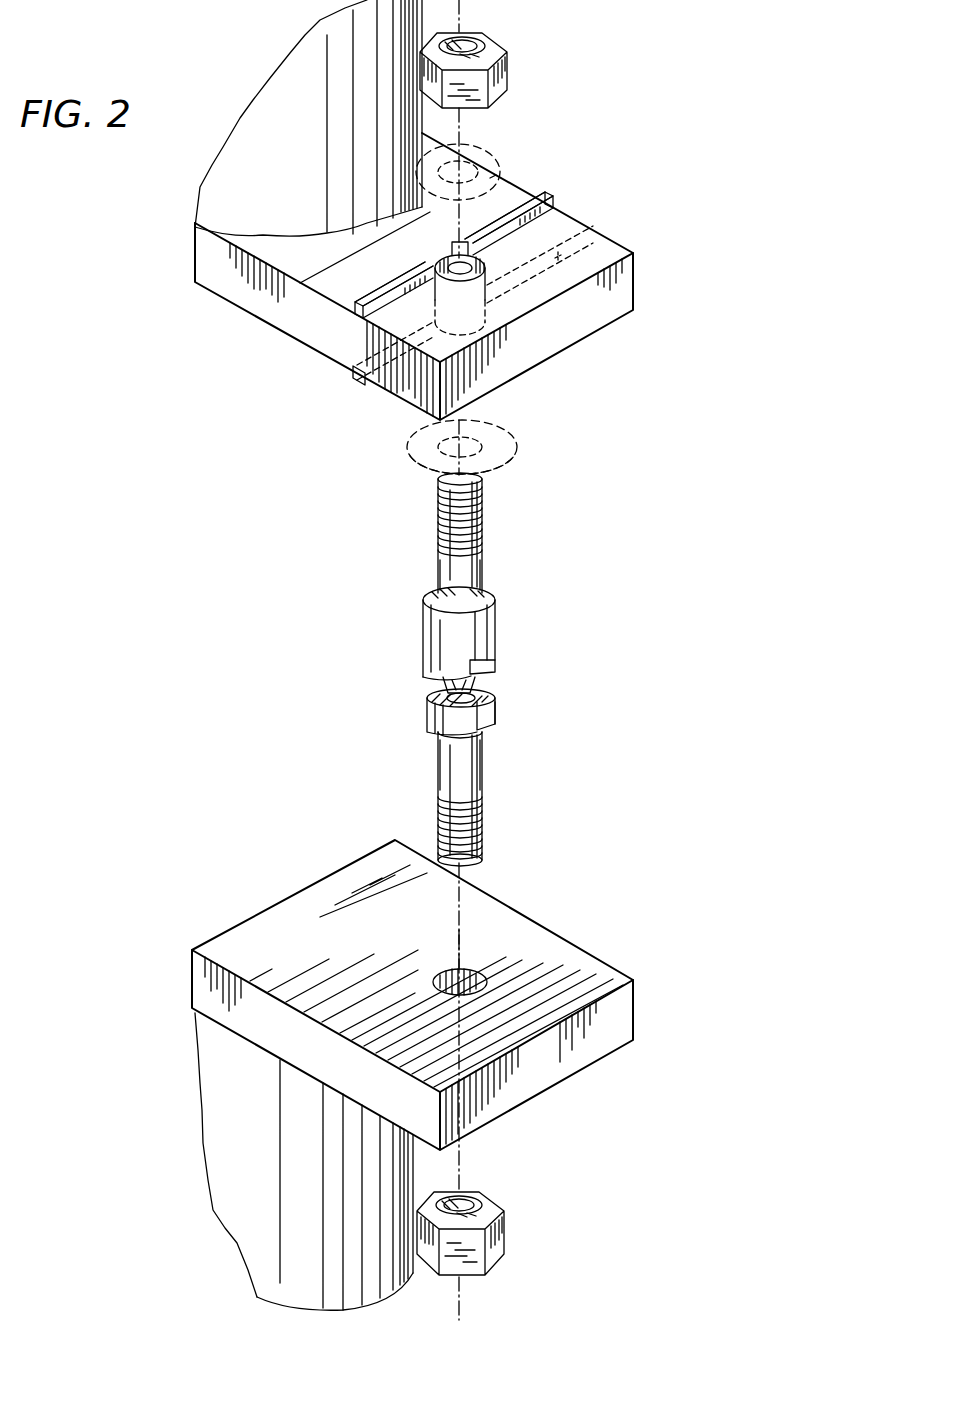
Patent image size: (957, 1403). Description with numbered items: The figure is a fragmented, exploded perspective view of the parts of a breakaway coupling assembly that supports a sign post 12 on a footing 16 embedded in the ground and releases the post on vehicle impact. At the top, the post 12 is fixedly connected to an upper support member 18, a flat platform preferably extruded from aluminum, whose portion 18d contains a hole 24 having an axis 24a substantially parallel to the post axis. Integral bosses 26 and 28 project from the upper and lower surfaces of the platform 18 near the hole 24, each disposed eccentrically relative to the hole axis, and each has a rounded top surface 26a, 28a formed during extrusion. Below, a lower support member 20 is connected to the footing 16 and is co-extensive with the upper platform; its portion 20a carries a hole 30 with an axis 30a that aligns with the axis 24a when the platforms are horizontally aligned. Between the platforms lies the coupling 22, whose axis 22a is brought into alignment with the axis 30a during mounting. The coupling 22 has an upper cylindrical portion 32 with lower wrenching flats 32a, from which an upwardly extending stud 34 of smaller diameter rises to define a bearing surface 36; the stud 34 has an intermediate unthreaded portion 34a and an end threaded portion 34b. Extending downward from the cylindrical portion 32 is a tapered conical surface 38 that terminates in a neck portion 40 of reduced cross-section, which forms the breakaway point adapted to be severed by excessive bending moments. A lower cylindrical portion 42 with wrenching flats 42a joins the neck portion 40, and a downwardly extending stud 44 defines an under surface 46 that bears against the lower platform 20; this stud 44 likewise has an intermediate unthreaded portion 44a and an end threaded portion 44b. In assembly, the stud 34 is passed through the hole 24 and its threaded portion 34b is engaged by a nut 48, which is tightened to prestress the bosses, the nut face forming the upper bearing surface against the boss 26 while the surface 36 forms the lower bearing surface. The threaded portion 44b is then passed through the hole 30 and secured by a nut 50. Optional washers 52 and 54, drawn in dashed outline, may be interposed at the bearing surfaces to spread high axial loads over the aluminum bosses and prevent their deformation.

The post 12 is at (295, 80).
The footing 16 is at (228, 1144).
The upper support member 18 is at (297, 305).
The portion of upper platform 18d is at (548, 347).
The lower support member 20 is at (565, 921).
The portion of lower platform 20a is at (550, 1069).
The coupling 22 is at (358, 755).
The axis of coupling 22a is at (470, 421).
The hole 24 is at (470, 258).
The axis of hole 24a is at (458, 228).
The boss 26 is at (580, 212).
The rounded top surface of boss 26a is at (555, 195).
The boss 28 is at (352, 374).
The rounded top surface of boss 28a is at (362, 390).
The hole 30 is at (440, 973).
The axis of hole 30a is at (458, 950).
The upper cylindrical portion 32 is at (492, 627).
The wrenching flats 32a is at (490, 665).
The stud 34 is at (429, 548).
The intermediate unthreaded portion 34a is at (475, 566).
The end threaded portion 34b is at (480, 513).
The bearing surface 36 is at (425, 593).
The downwardly tapered conical surface 38 is at (440, 687).
The neck portion 40 is at (470, 692).
The lower cylindrical portion 42 is at (430, 726).
The wrenching flats 42a is at (490, 728).
The stud 44 is at (428, 812).
The intermediate unthreaded portion 44a is at (478, 776).
The end threaded portion 44b is at (485, 839).
The under surface 46 is at (440, 730).
The nut 48 is at (505, 72).
The nut 50 is at (505, 1236).
The washer 52 is at (505, 152).
The washer 54 is at (515, 450).